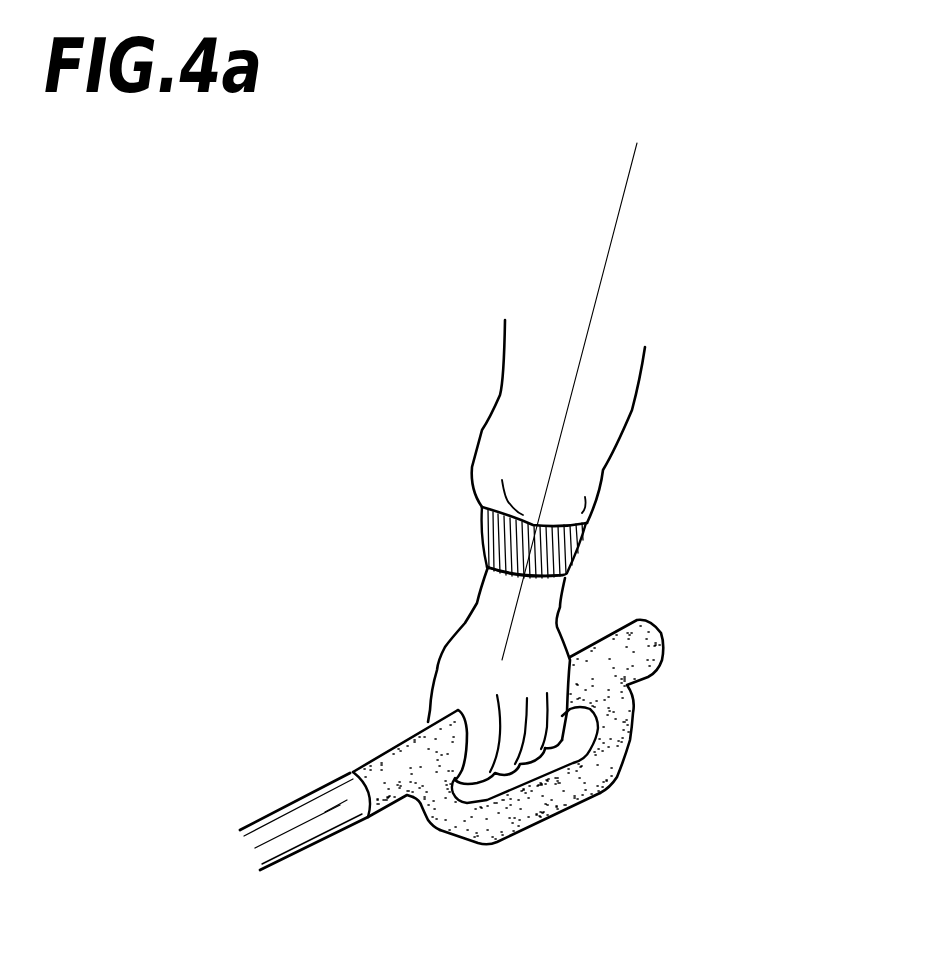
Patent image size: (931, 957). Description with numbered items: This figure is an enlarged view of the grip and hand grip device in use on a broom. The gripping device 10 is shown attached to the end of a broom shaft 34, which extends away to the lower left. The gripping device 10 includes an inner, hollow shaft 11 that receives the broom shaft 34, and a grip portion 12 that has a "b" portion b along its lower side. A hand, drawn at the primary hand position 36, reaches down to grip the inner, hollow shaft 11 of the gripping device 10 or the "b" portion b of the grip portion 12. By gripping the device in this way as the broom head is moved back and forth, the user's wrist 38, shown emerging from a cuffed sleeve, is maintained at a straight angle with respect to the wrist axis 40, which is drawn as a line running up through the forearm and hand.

The gripping device 10 is at (668, 617).
The inner, hollow shaft 11 is at (372, 760).
The grip portion 12 is at (608, 750).
The broom shaft 34 is at (295, 840).
The primary hand position 36 is at (472, 632).
The wrist 38 is at (497, 450).
The wrist axis 40 is at (613, 238).
The "b" portion of grip portion b is at (562, 793).